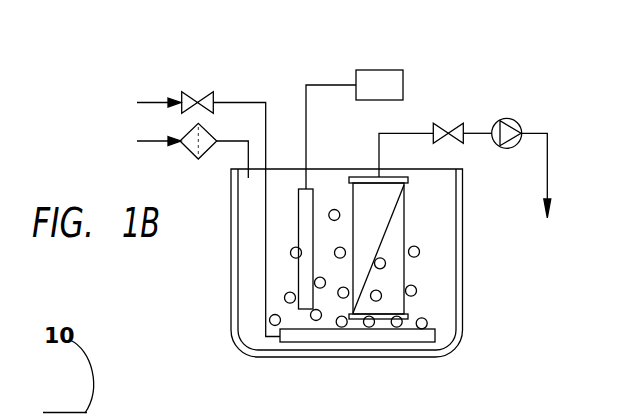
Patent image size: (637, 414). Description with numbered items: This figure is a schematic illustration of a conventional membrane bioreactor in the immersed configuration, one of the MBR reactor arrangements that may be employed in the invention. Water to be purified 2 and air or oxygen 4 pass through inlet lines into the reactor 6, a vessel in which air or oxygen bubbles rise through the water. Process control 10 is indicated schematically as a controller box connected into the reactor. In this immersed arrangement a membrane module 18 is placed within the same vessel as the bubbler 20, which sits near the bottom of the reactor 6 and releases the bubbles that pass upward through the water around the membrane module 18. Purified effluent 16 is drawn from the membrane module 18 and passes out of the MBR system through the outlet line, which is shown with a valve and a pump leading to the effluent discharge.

The water to be purified 2 is at (181, 150).
The air or oxygen 4 is at (197, 213).
The reactor 6 is at (238, 296).
The process control 10 is at (397, 83).
The purified effluent 16 is at (547, 183).
The membrane module 18 is at (392, 281).
The bubbler 20 is at (335, 335).